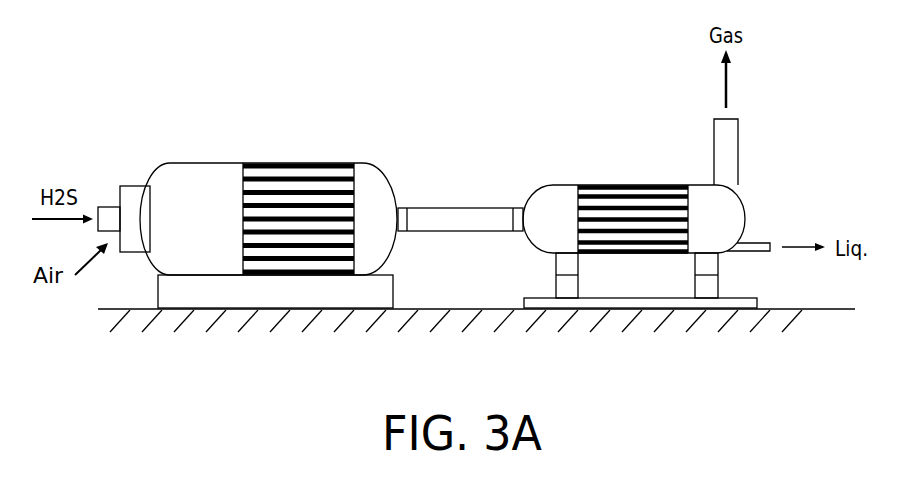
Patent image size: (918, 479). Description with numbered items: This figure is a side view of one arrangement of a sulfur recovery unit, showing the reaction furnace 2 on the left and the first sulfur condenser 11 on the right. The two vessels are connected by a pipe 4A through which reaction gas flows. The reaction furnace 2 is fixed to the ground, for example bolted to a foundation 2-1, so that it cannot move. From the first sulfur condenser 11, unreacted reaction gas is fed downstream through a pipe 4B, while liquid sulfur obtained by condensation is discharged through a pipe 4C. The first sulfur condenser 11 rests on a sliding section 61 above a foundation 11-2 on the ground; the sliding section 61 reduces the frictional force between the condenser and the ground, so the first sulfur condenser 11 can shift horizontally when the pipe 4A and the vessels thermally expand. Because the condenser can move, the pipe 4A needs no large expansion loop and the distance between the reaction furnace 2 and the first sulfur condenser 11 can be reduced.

The reaction furnace 2 is at (364, 170).
The foundation 2-1 is at (393, 292).
The pipe 4A is at (455, 208).
The pipe 4B is at (737, 165).
The pipe 4C is at (754, 243).
The first sulfur condenser 11 is at (633, 185).
The foundation 11-2 is at (763, 305).
The sliding section 61 is at (725, 262).